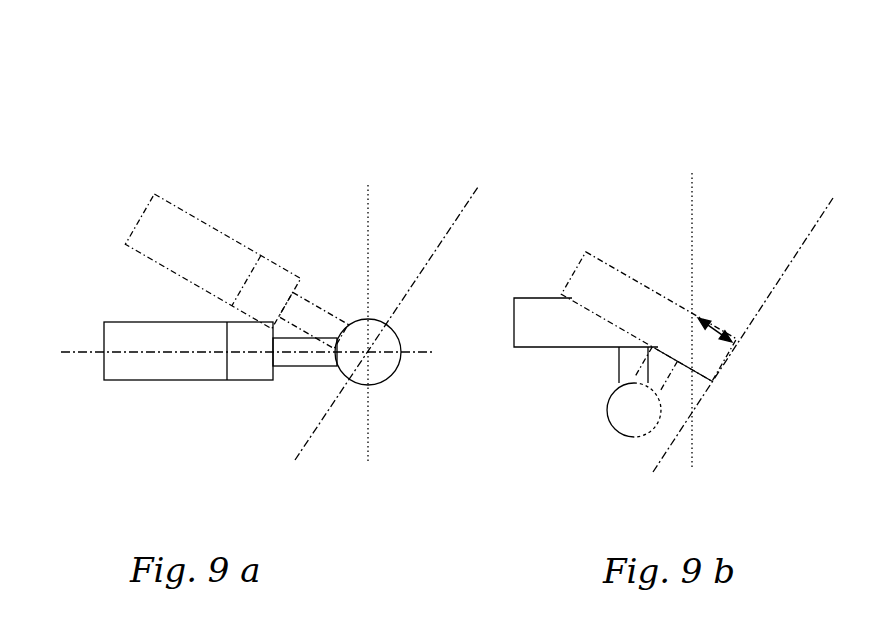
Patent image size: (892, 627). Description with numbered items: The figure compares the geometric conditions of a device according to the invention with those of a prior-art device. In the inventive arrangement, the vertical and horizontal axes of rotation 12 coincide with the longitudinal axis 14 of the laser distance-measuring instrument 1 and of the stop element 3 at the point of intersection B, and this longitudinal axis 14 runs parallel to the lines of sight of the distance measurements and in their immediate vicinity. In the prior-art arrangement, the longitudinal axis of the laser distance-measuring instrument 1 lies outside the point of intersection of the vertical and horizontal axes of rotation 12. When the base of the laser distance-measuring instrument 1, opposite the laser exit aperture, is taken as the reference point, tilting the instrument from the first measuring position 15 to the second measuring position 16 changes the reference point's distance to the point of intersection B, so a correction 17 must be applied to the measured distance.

In FIG. 9A, the laser distance-measuring instrument 1 is at (199, 275).
In FIG. 9B, the laser distance-measuring instrument 1 is at (600, 272).
In FIG. 9A, the stop element 3 is at (194, 246).
In FIG. 9A, the vertical and horizontal axes of rotation 12 is at (413, 385).
In FIG. 9B, the vertical and horizontal axes of rotation 12 is at (566, 440).
In FIG. 9A, the longitudinal axis 14 is at (246, 392).
In FIG. 9A, the first measuring position 15 is at (298, 271).
In FIG. 9B, the first measuring position 15 is at (627, 278).
In FIG. 9A, the second measuring position 16 is at (352, 247).
In FIG. 9B, the second measuring position 16 is at (697, 257).
In FIG. 9B, the correction 17 is at (757, 383).
In FIG. 9A, the point of intersection B is at (427, 391).
In FIG. 9B, the point of intersection B is at (569, 404).